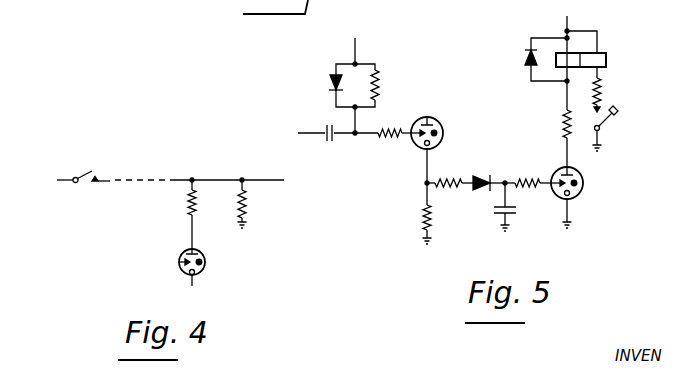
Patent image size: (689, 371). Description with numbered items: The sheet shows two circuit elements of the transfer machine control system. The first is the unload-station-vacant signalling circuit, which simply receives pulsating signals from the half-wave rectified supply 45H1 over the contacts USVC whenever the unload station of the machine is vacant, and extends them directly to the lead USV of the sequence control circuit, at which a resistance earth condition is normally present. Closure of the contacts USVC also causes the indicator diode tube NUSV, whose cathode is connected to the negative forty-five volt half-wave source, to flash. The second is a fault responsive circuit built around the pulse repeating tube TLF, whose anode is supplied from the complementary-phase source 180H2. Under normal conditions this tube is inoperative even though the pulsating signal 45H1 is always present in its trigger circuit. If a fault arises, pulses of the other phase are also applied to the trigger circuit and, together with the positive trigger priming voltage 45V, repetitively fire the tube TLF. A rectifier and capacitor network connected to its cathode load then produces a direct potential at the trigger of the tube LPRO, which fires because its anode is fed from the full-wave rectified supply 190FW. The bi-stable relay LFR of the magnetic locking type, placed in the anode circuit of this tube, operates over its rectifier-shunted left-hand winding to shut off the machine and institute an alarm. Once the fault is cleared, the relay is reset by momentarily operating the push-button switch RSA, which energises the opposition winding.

In FIG. 4, the 45H1 pulsating supply lead 45H1 is at (48, 180).
In FIG. 5, the 45H1 pulsating supply lead 45H1 is at (319, 133).
In FIG. 4, the unload-station-vacant contacts USVC is at (116, 167).
In FIG. 4, the lead USV is at (241, 200).
In FIG. 4, the indicator diode tube NUSV is at (208, 242).
In FIG. 5, the +45 v. trigger priming voltage 45V is at (354, 78).
In FIG. 5, the 180H2 pulsating supply source 180H2 is at (414, 112).
In FIG. 5, the pulse repeating tube TLF is at (481, 177).
In FIG. 5, the tube LPRO is at (585, 197).
In FIG. 5, the 190FW full-wave rectified supply lead 190FW is at (559, 83).
In FIG. 5, the bi-stable relay LFR is at (640, 57).
In FIG. 5, the push-button switch RSA is at (613, 114).